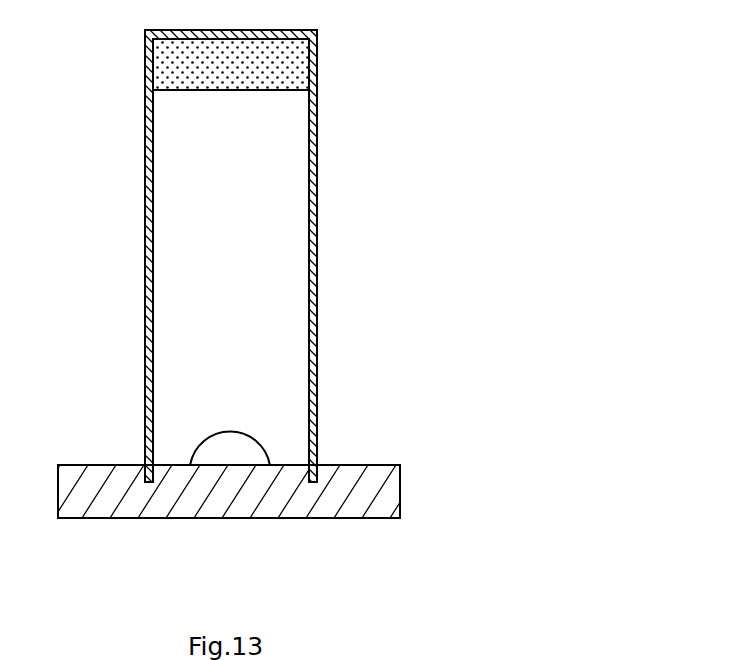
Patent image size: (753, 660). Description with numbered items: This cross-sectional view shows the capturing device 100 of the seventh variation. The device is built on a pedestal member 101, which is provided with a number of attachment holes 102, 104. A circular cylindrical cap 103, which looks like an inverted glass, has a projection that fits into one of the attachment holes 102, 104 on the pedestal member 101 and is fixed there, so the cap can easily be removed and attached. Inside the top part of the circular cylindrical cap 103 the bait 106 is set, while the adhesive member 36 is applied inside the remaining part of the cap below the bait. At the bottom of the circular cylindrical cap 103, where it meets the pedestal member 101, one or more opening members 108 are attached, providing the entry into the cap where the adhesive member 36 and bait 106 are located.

The capturing device 100 is at (355, 46).
The pedestal member 101 is at (364, 511).
The attachment hole 102 is at (143, 470).
The circular cylindrical cap 103 is at (317, 172).
The mounting hole 104 is at (313, 473).
The bait 106 is at (233, 47).
The opening member 108 is at (231, 454).
The adhesive member 36 is at (153, 213).